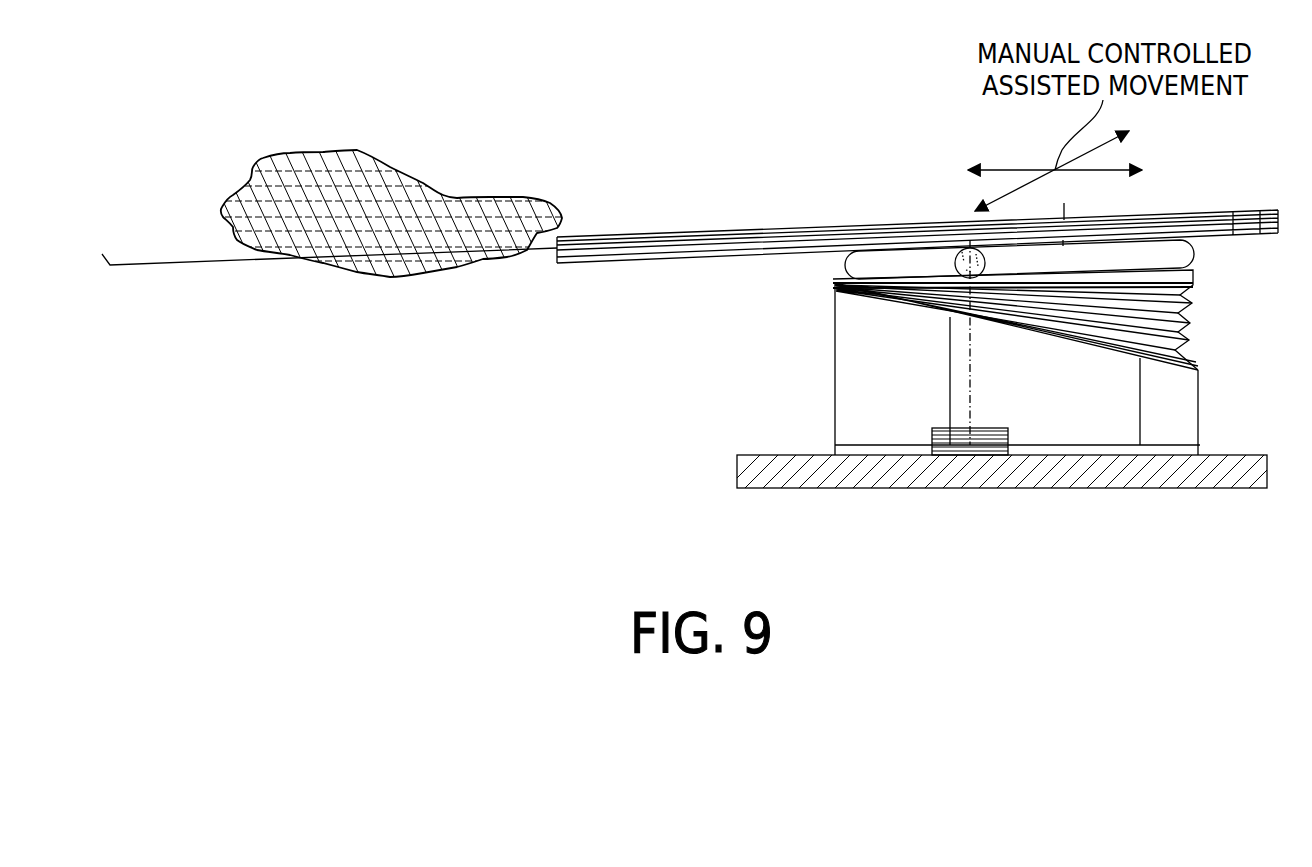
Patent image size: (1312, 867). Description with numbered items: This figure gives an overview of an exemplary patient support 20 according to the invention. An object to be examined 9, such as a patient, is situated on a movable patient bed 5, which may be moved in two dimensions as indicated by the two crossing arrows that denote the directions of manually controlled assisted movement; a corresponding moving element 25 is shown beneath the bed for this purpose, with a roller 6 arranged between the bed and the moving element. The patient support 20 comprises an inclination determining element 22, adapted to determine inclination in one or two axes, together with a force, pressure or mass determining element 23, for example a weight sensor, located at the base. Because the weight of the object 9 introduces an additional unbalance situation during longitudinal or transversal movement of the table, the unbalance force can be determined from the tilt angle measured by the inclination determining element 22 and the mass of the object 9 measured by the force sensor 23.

The object to be examined 9 is at (443, 206).
The footrest bar / platform 5 is at (615, 248).
The roller 6 is at (1178, 253).
The inclination determining element 22 is at (963, 245).
The moving element 25 is at (1178, 325).
The patient support 20 is at (648, 438).
The force, pressure or mass determining element 23 is at (962, 458).